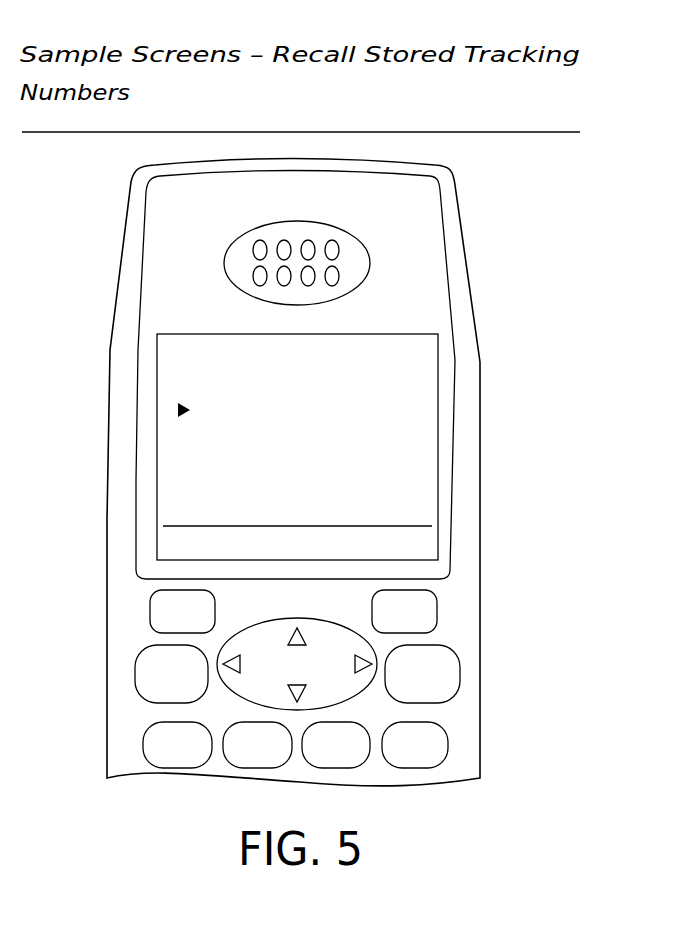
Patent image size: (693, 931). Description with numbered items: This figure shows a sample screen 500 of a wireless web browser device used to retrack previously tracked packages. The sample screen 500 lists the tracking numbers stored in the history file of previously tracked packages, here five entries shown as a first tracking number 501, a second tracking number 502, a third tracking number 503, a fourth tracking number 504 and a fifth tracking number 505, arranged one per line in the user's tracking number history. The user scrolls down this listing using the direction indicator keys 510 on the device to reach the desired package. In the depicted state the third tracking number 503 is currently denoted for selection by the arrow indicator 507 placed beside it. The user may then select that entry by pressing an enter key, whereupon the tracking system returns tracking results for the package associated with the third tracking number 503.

The sample screen 500 is at (543, 344).
The first tracking number 501 is at (157, 353).
The second tracking number 502 is at (157, 382).
The third tracking number 503 is at (157, 409).
The fourth tracking number 504 is at (157, 437).
The fifth tracking number 505 is at (157, 465).
The arrow indicator 507 is at (183, 395).
The direction indicator keys 510 is at (381, 646).